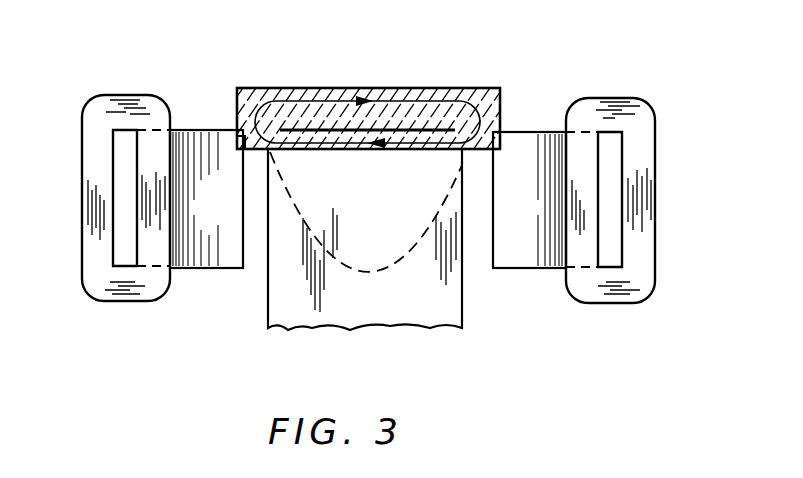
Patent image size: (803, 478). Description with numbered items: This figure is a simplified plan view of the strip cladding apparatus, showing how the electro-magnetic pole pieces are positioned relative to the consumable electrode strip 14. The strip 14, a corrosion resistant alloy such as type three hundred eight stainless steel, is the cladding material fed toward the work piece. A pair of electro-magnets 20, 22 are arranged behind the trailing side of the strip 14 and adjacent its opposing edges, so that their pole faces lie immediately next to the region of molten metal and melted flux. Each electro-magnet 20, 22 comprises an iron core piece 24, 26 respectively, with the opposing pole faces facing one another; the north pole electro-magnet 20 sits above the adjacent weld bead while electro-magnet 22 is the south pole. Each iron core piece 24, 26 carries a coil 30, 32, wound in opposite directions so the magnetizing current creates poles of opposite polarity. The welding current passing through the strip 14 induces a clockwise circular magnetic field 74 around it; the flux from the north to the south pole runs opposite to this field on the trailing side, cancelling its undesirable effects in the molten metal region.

The strip 14 is at (312, 130).
The circular magnetic field 74 is at (450, 100).
The electro-magnet 20 is at (135, 224).
The electro-magnet 22 is at (602, 228).
The iron core piece 24 is at (206, 220).
The iron core piece 26 is at (537, 268).
The coil 30 is at (82, 168).
The coil 32 is at (652, 148).